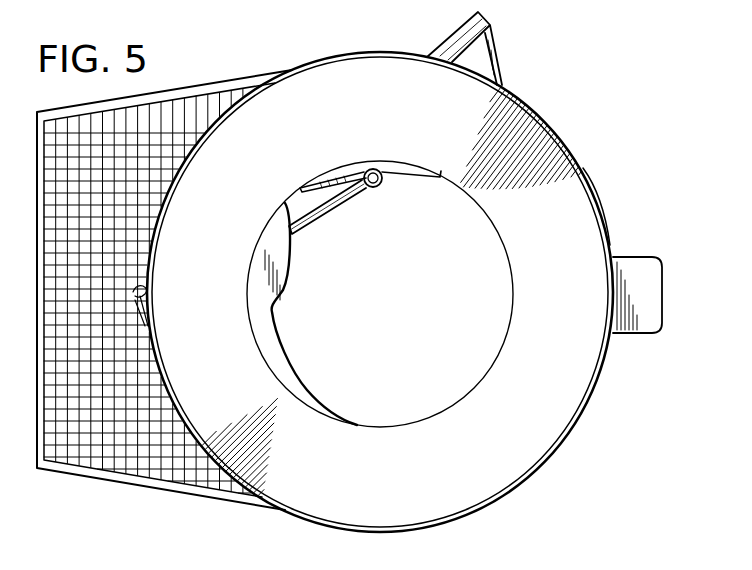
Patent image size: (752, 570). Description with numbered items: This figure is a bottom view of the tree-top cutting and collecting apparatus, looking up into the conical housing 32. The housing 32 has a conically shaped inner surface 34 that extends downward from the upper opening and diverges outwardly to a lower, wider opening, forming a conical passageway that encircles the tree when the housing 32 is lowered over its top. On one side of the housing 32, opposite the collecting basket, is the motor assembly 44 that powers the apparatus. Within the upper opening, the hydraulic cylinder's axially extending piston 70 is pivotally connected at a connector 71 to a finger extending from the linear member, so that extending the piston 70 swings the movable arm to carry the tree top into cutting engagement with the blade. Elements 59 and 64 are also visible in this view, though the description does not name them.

The conical housing 32 is at (589, 406).
The conically shaped inner surface 34 is at (521, 118).
The motor assembly 44 is at (633, 251).
The flap 59 is at (273, 354).
The support strut 64 is at (490, 18).
The piston 70 is at (349, 196).
The connector 71 is at (384, 184).